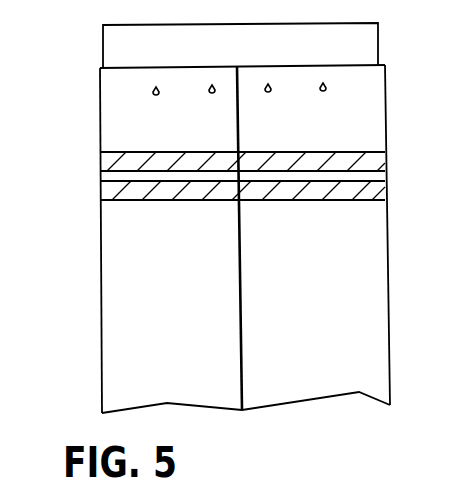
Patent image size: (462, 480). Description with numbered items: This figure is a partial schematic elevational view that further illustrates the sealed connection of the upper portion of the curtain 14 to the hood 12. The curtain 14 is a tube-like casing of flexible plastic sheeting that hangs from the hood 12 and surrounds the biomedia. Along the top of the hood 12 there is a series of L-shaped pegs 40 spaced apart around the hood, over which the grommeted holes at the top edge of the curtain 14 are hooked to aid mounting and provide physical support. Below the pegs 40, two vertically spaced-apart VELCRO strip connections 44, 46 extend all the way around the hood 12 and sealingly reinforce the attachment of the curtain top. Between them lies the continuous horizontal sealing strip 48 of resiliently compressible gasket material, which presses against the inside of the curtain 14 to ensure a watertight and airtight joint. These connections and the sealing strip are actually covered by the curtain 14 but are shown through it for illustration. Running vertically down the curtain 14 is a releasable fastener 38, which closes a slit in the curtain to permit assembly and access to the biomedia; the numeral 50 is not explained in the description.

The hood 12 is at (103, 49).
The curtain 14 is at (102, 283).
The releasable fastener 38 is at (243, 293).
The L-shaped peg 40 is at (99, 87).
The releasable hook and loop connection 44 is at (100, 198).
The releasable hook and loop connection 46 is at (100, 168).
The sealing strip 48 is at (386, 175).
The side panel 50 is at (453, 231).